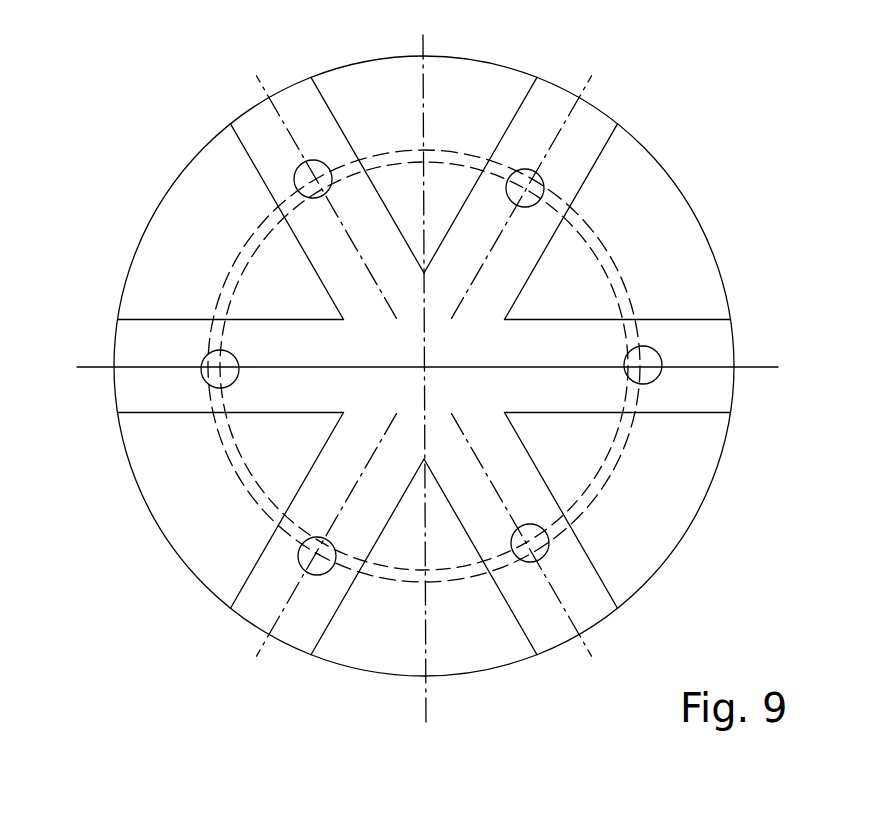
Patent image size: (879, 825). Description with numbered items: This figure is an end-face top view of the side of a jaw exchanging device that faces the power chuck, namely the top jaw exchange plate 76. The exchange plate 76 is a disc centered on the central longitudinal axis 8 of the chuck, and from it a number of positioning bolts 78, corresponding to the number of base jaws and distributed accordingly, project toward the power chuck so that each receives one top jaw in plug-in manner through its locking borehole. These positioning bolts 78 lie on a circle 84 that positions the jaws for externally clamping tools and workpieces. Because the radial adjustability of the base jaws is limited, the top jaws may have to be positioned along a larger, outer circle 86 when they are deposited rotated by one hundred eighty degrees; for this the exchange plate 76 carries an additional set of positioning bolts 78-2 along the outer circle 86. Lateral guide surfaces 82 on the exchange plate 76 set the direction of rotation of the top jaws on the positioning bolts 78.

The central longitudinal axis 8 is at (425, 367).
The top jaw exchange plate 76 is at (465, 655).
The positioning bolts 78 is at (205, 377).
The additional positioning bolts 78-2 is at (310, 168).
The lateral guide surfaces 82 is at (140, 321).
The circle 84 is at (602, 497).
The outer circle 86 is at (597, 484).